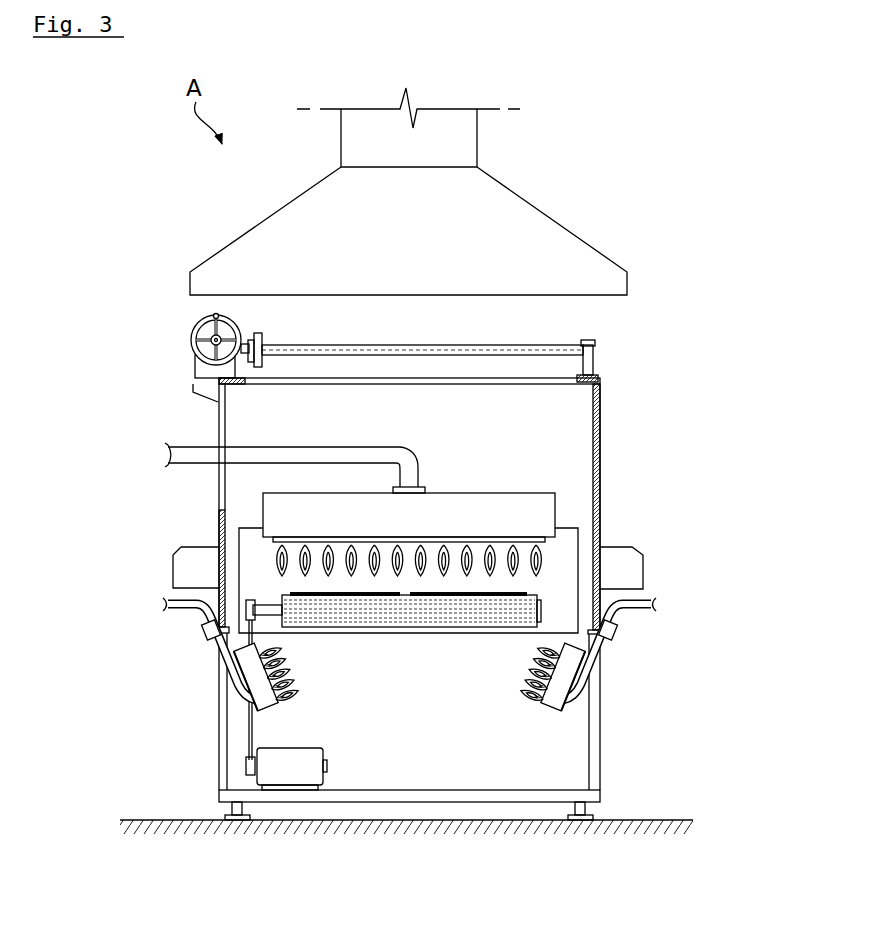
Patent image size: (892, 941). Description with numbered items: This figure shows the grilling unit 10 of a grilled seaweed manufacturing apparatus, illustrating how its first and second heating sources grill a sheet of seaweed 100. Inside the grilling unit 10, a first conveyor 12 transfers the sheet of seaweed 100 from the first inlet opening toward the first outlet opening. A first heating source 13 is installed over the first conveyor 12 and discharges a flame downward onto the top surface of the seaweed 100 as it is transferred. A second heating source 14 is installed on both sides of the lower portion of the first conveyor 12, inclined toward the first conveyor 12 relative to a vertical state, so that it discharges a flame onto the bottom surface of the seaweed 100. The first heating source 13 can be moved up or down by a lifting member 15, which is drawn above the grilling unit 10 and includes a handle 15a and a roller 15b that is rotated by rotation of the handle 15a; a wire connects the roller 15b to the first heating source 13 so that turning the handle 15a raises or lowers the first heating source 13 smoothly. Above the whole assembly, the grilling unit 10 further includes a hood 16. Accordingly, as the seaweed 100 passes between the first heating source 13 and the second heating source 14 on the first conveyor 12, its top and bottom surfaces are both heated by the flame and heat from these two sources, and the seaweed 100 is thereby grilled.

The grilling unit 10 is at (602, 420).
The first conveyor 12 is at (405, 627).
The first heating source 13 is at (560, 513).
The second heating source 14 is at (250, 712).
The lifting member 15 is at (89, 282).
The handle 15a is at (195, 345).
The roller 15b is at (292, 345).
The hood 16 is at (568, 225).
The seaweed 100 is at (290, 591).